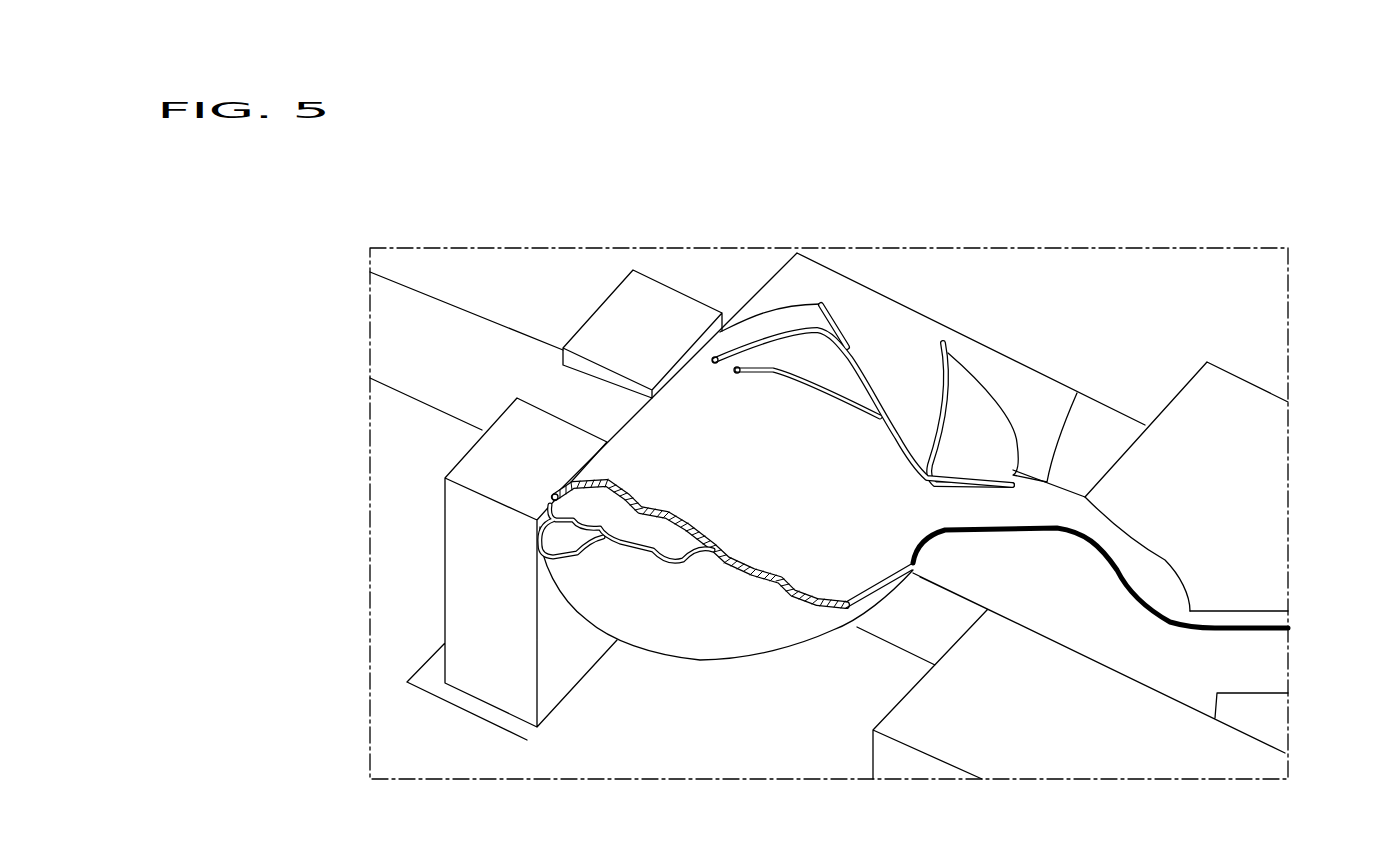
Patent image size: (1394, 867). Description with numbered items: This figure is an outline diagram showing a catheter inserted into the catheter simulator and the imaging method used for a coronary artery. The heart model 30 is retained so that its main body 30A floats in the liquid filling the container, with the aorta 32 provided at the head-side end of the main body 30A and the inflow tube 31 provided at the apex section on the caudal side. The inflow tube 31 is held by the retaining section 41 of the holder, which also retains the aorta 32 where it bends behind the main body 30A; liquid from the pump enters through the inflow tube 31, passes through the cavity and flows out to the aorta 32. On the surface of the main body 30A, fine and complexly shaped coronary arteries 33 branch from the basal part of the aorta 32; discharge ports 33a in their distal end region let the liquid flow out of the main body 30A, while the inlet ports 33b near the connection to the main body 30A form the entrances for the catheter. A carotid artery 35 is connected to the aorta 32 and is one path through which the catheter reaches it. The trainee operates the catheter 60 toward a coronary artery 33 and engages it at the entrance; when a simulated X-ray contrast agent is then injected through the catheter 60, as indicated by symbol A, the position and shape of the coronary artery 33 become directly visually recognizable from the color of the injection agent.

The heart model 30 is at (968, 358).
The main body 30A is at (873, 333).
The inflow tube 31 is at (597, 400).
The aorta 32 is at (1120, 535).
The coronary arteries 33 is at (832, 300).
The discharge ports 33a is at (737, 364).
The inlet ports 33b is at (1040, 483).
The carotid artery 35 is at (1257, 622).
The retaining section 41 is at (645, 295).
The catheter 60 is at (1290, 628).
The symbol A (injection agent visualization) A is at (806, 606).